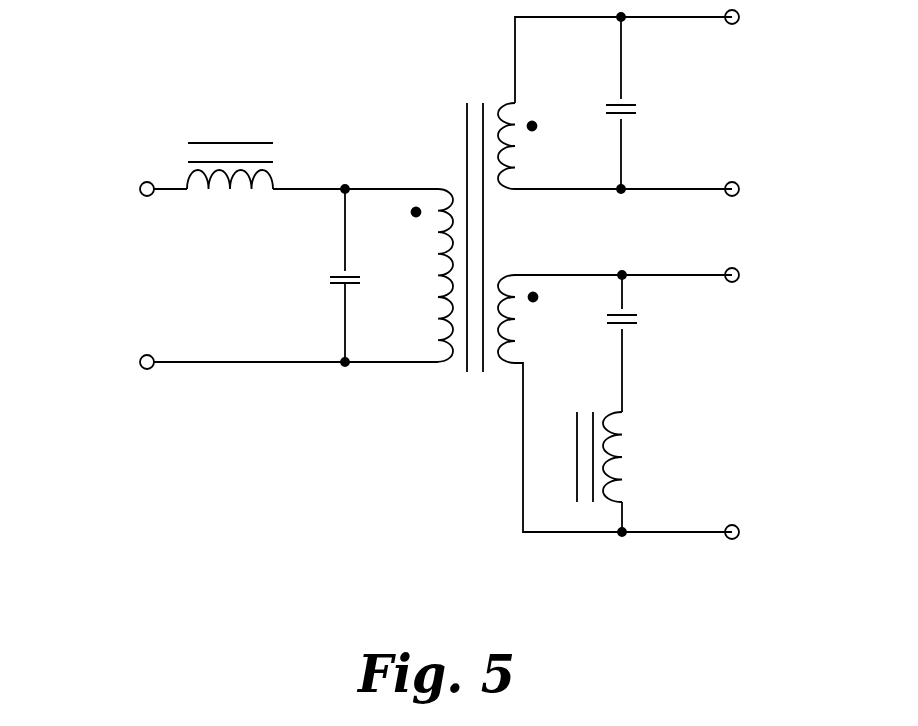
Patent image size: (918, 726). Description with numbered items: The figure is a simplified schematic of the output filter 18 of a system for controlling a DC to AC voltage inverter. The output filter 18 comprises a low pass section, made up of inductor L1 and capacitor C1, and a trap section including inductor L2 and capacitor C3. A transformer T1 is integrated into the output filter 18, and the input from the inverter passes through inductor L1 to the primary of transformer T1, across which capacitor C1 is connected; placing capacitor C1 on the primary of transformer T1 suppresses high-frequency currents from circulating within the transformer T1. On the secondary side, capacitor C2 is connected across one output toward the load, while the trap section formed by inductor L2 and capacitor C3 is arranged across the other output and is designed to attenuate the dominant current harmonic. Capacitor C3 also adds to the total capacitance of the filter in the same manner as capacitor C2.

The output filter 18 is at (370, 83).
The inductor L1 is at (249, 165).
The capacitor C1 is at (327, 281).
The transformer T1 is at (475, 220).
The capacitor C2 is at (640, 111).
The capacitor C3 is at (639, 322).
The inductor L2 is at (619, 457).